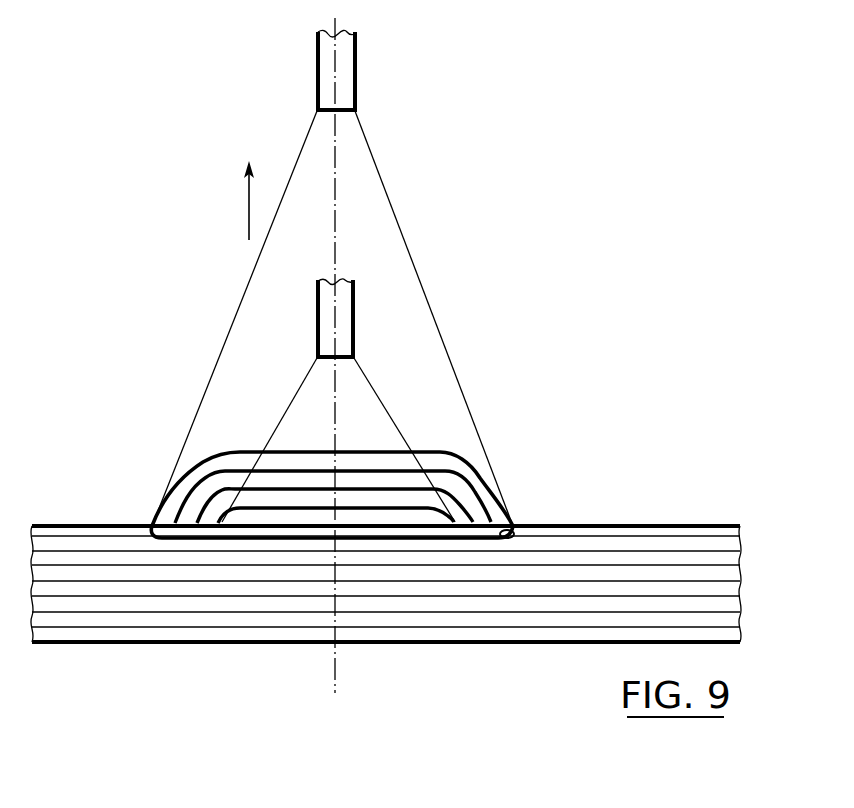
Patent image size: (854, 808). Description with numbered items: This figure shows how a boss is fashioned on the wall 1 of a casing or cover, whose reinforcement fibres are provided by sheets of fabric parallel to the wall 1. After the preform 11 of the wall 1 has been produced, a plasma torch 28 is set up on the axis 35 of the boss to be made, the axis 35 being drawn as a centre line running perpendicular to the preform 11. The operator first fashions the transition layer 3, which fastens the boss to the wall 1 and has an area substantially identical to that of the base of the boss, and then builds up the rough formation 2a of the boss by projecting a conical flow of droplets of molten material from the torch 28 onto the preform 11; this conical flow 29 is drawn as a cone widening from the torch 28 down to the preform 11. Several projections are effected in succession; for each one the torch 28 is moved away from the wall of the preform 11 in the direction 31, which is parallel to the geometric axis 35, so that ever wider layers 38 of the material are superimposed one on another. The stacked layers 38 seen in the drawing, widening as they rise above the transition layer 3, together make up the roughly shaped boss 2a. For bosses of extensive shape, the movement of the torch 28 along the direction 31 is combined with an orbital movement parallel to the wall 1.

The wall 1 is at (386, 594).
The preform 11 is at (556, 602).
The rough formation of the boss 2a is at (485, 479).
The transition layer 3 is at (553, 527).
The plasma torch 28 is at (348, 333).
The beam cone 29 is at (392, 399).
The direction 31 is at (249, 220).
The axis 35 is at (337, 661).
The layers 38 is at (183, 495).